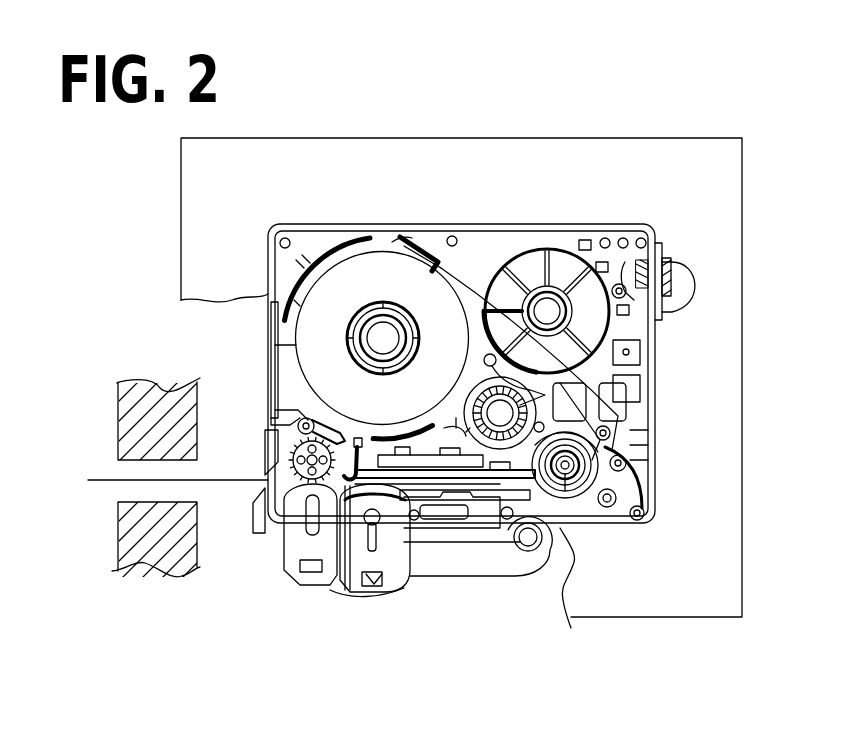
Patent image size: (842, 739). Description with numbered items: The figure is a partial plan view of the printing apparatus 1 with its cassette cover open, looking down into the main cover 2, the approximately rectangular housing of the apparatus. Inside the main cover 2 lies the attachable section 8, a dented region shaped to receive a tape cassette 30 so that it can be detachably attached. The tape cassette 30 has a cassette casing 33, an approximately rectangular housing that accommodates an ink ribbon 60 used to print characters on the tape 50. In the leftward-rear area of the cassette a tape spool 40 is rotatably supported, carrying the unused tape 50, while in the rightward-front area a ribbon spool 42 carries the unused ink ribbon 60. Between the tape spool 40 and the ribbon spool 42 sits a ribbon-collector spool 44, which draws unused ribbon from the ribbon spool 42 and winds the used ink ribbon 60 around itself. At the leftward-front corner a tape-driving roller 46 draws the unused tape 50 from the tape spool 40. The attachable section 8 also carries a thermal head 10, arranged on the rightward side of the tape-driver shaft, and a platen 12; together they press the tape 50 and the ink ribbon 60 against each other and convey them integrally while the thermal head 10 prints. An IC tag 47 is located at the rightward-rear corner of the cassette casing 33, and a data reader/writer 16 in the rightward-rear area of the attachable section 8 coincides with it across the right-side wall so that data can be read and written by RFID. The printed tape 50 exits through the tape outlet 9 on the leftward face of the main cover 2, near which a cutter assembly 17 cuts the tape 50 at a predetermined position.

The printing apparatus 1 is at (494, 77).
The main cover 2 is at (679, 170).
The attachable section 8 is at (352, 228).
The tape outlet 9 is at (105, 435).
The thermal head 10 is at (385, 547).
The platen 12 is at (481, 565).
The data reader/writer 16 is at (680, 288).
The cutter assembly 17 is at (263, 410).
The tape cassette 30 is at (499, 230).
The cassette casing 33 is at (440, 230).
The tape spool 40 is at (362, 312).
The ribbon spool 42 is at (605, 470).
The ribbon-collector spool 44 is at (600, 422).
The tape-driving roller 46 is at (322, 440).
The IC tag 47 is at (622, 265).
The tape 50 is at (386, 270).
The ink ribbon 60 is at (443, 437).